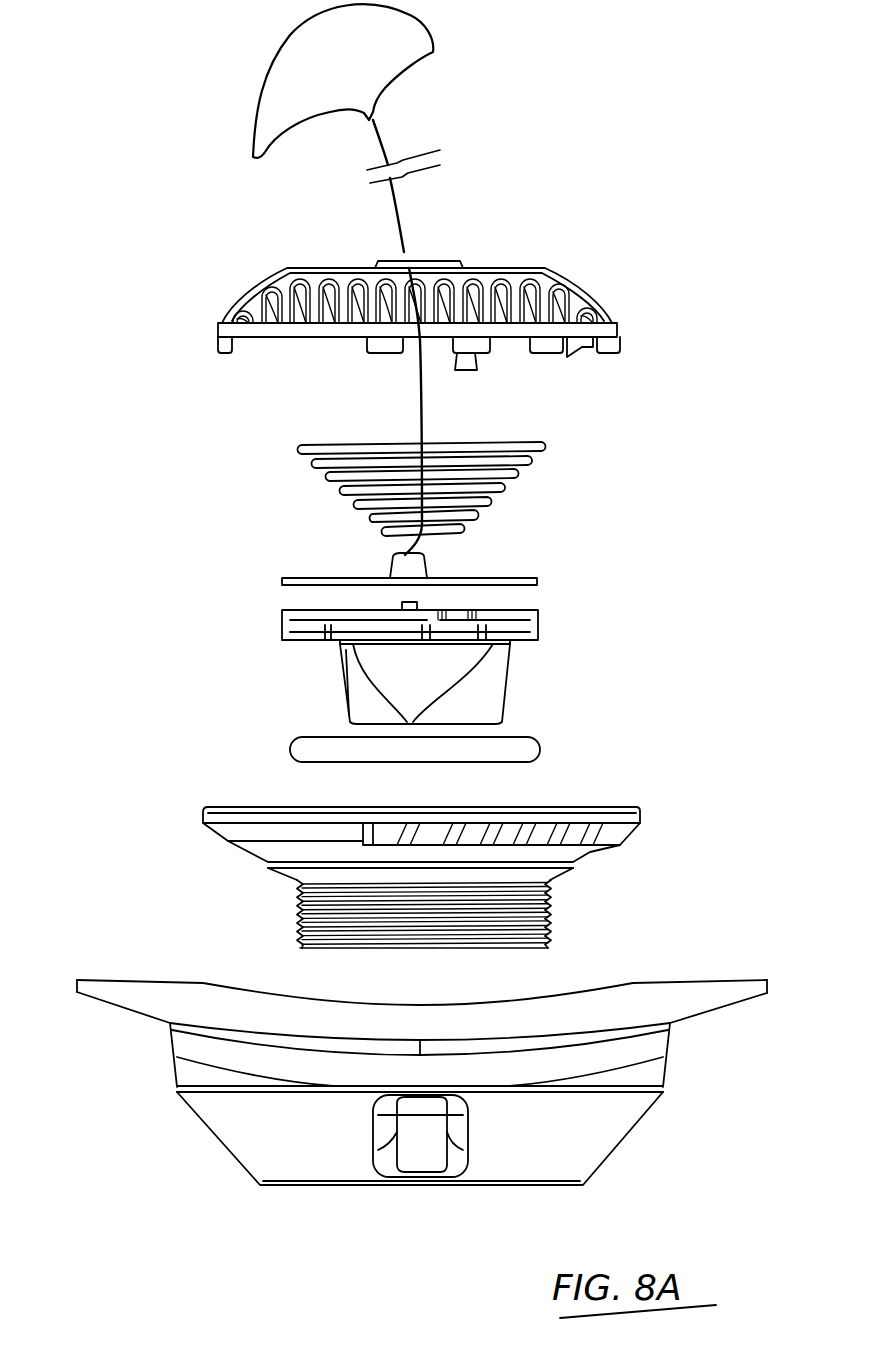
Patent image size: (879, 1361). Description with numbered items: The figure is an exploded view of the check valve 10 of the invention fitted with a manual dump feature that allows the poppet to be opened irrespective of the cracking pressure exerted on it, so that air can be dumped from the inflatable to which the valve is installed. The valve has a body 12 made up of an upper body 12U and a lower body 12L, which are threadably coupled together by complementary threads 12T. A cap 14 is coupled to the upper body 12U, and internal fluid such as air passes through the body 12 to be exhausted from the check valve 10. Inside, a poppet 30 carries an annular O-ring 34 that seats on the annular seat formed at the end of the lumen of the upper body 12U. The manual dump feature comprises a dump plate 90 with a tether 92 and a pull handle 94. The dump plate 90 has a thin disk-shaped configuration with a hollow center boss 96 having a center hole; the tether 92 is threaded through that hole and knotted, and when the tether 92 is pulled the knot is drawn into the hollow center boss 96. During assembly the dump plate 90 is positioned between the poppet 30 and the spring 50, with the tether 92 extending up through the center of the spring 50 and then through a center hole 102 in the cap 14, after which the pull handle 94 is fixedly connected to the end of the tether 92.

The check valve 10 is at (735, 263).
The body 12 is at (640, 815).
The upper body 12U is at (590, 853).
The threads 12T is at (552, 922).
The lower body 12L is at (632, 985).
The cap 14 is at (452, 283).
The poppet 30 is at (543, 632).
The O-ring 34 is at (543, 750).
The spring 50 is at (530, 467).
The dump plate 90 is at (538, 580).
The tether 92 is at (423, 408).
The pull handle 94 is at (432, 31).
The hollow center boss 96 is at (390, 567).
The center hole 102 is at (447, 260).